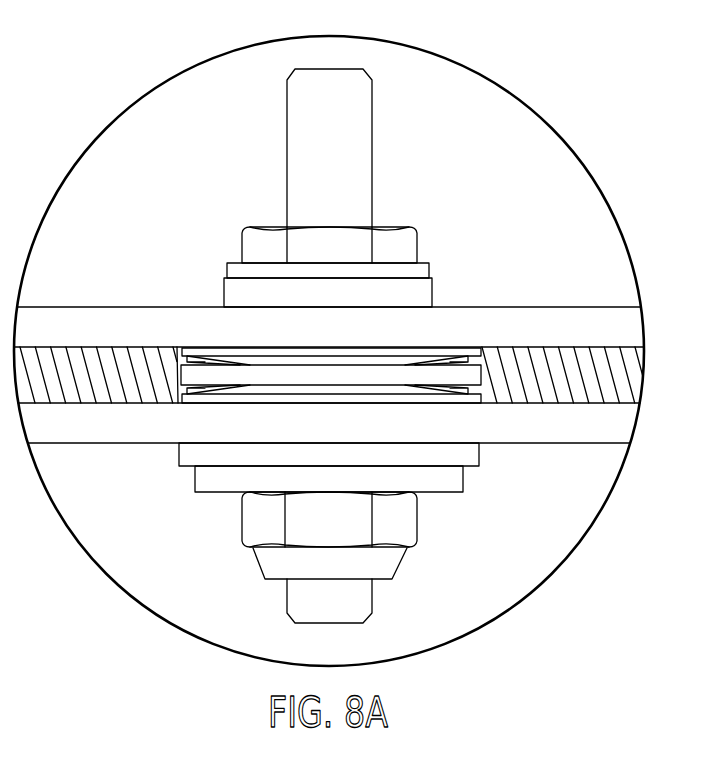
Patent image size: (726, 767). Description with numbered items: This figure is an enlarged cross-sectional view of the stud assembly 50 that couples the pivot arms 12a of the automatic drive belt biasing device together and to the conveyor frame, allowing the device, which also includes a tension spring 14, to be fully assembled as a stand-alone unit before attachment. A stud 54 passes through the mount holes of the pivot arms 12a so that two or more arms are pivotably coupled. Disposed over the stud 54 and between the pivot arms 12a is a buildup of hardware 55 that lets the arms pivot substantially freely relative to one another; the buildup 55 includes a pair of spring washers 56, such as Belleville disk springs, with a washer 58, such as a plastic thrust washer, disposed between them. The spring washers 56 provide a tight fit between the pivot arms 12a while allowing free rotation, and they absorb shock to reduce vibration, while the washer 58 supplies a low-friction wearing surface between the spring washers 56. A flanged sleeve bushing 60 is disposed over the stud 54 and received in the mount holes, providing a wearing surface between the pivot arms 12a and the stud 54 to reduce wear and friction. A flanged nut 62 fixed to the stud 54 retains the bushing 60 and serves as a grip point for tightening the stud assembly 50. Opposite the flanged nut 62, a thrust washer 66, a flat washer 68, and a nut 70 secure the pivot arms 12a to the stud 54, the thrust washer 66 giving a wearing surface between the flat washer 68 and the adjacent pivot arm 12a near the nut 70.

The stud assembly 50 is at (136, 140).
The pivot arm 12a is at (593, 322).
The tension spring 14 is at (82, 370).
The stud 54 is at (360, 147).
The buildup of hardware 55 is at (168, 373).
The spring washer 56 is at (403, 357).
The washer 58 is at (482, 364).
The sleeve bushing 60 is at (225, 293).
The flanged nut 62 is at (393, 255).
The thrust washer 66 is at (465, 457).
The flat washer 68 is at (215, 482).
The nut 70 is at (403, 528).